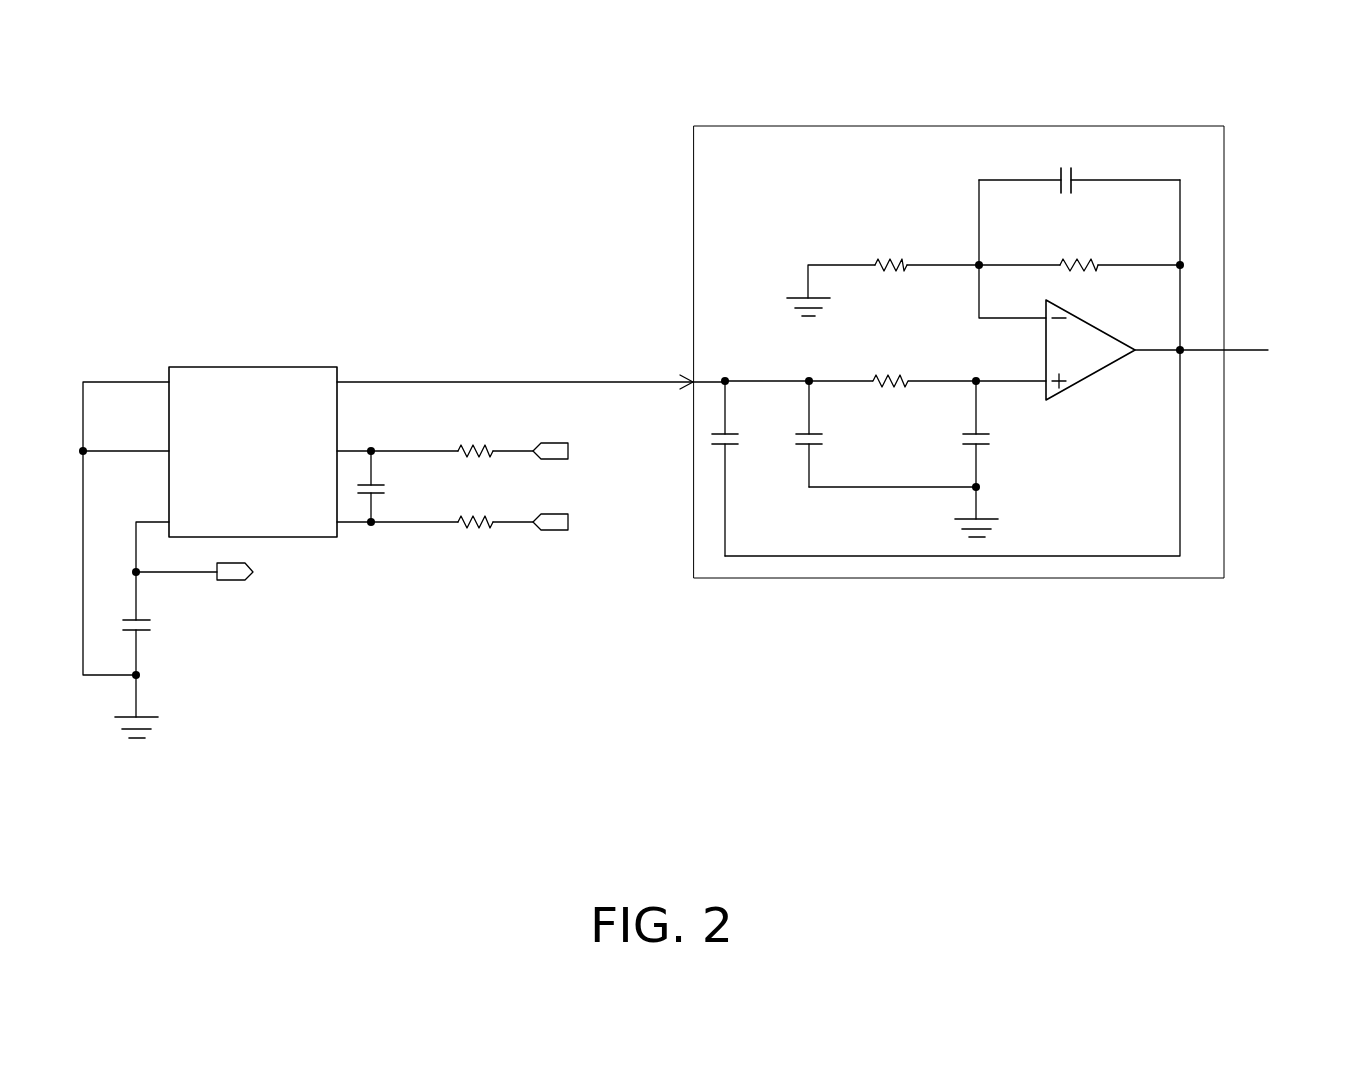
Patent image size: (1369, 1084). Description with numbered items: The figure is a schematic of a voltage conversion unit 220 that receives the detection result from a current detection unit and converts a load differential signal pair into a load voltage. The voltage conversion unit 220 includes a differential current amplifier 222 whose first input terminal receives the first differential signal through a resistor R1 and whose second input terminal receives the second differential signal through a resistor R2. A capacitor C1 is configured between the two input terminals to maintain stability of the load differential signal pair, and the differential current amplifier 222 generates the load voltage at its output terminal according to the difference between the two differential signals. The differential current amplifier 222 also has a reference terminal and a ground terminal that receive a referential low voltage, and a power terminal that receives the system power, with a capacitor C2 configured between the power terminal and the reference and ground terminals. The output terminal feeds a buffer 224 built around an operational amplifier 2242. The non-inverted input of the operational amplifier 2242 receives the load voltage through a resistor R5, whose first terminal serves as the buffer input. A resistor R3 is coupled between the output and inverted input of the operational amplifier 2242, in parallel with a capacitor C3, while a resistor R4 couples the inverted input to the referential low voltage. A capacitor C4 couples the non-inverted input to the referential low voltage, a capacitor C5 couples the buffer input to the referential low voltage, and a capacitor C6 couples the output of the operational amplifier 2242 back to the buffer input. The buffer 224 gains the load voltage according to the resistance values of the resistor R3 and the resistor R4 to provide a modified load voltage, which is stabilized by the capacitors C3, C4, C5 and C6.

The voltage conversion unit 220 is at (1269, 698).
The differential current amplifier 222 is at (254, 367).
The buffer 224 is at (1139, 126).
The operational amplifier 2242 is at (1073, 311).
The capacitor C1 is at (387, 486).
The capacitor C2 is at (155, 665).
The capacitor C3 is at (1079, 162).
The capacitor C4 is at (996, 450).
The capacitor C5 is at (830, 434).
The capacitor C6 is at (746, 468).
The resistor R1 is at (435, 542).
The resistor R2 is at (435, 431).
The resistor R3 is at (1079, 247).
The resistor R4 is at (893, 260).
The resistor R5 is at (890, 365).